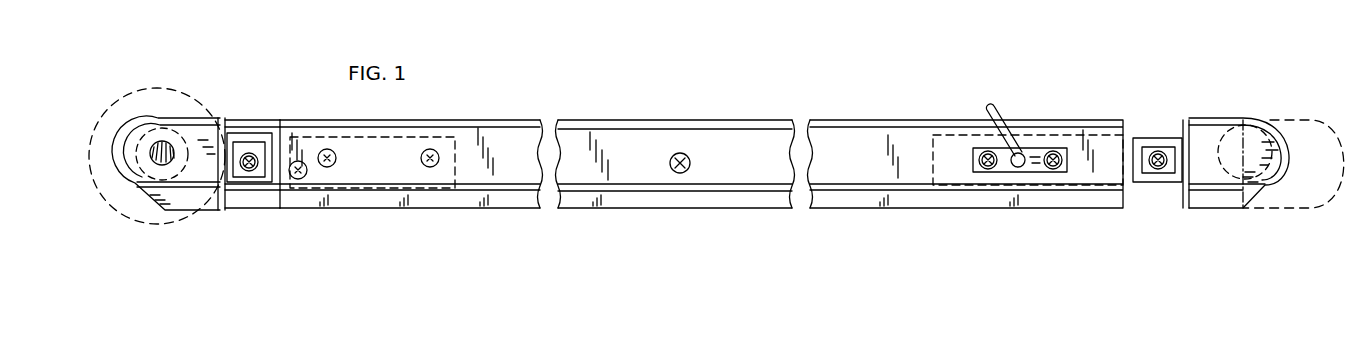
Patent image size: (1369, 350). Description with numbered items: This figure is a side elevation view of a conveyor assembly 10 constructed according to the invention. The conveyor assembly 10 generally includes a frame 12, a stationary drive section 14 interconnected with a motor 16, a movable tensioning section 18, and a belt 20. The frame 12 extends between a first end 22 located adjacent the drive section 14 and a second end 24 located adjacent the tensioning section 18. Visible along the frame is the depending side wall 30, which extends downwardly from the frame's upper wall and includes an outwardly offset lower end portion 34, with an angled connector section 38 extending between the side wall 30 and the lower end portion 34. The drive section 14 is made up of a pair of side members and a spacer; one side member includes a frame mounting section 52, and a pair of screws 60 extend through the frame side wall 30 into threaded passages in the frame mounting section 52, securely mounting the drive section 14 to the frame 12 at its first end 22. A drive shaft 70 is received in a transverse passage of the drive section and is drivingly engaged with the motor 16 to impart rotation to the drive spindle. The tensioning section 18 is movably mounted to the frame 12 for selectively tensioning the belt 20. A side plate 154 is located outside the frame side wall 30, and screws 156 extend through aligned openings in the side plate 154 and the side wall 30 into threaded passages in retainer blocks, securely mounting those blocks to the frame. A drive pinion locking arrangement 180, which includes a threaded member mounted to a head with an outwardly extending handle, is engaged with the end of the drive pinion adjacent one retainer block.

The conveyor assembly 10 is at (918, 70).
The frame 12 is at (738, 216).
The drive section 14 is at (214, 224).
The motor 16 is at (146, 226).
The tensioning section 18 is at (1182, 218).
The belt 20 is at (1256, 110).
The first end 22 is at (279, 133).
The second end 24 is at (1124, 134).
The side wall 30 is at (618, 140).
The lower end portion 34 is at (624, 197).
The angled connector section 38 is at (665, 188).
The frame mounting section 52 is at (458, 155).
The screws 60 is at (327, 167).
The drive shaft 70 is at (158, 164).
The side plate 154 is at (1005, 171).
The screws 156 is at (980, 172).
The drive pinion locking arrangement 180 is at (1020, 132).